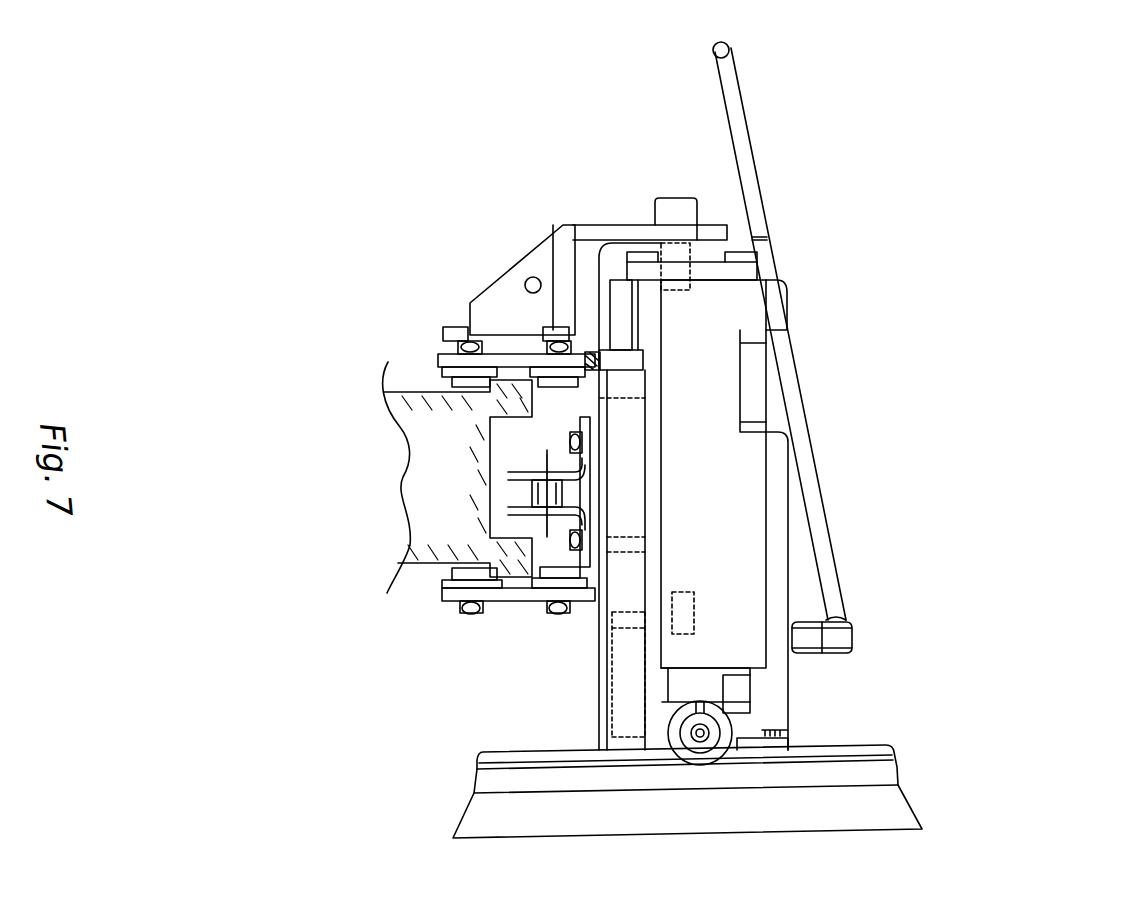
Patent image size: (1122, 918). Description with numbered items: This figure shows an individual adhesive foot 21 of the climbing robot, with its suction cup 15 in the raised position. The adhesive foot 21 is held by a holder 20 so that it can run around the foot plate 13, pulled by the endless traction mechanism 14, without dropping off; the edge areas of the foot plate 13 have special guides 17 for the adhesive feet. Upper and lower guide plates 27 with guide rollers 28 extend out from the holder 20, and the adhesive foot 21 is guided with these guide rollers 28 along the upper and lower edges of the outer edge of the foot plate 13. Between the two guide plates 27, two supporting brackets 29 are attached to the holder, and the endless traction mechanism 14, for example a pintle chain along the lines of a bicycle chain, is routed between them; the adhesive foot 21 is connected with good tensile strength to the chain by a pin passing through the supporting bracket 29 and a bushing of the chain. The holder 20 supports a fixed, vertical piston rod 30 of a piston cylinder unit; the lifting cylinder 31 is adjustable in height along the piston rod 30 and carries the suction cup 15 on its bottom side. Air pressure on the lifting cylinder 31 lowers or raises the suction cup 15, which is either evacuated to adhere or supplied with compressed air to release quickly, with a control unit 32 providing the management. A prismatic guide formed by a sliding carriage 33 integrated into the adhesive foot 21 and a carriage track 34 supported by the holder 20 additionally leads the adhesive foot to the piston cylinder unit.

The foot plate 13 is at (447, 503).
The endless traction mechanism 14 is at (567, 485).
The suction cup 15 is at (870, 782).
The guide 17 is at (520, 386).
The holder 20 is at (543, 265).
The adhesive foot 21 is at (981, 386).
The guide plate 27 is at (532, 365).
The guide roller 28 is at (470, 382).
The supporting bracket 29 is at (512, 465).
The piston rod 30 is at (672, 220).
The lifting cylinder 31 is at (707, 315).
The control unit 32 is at (777, 497).
The sliding carriage 33 is at (628, 318).
The carriage track 34 is at (625, 708).